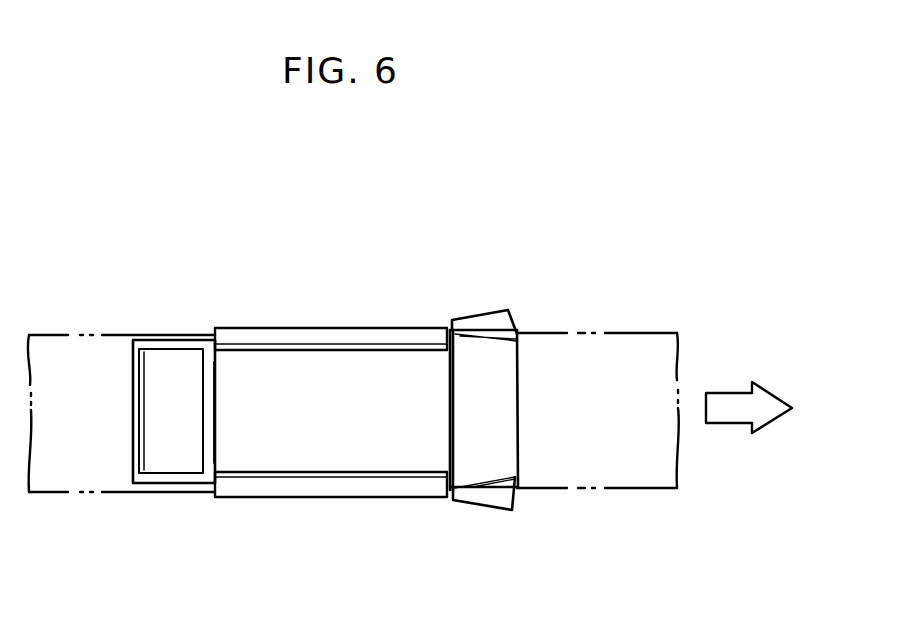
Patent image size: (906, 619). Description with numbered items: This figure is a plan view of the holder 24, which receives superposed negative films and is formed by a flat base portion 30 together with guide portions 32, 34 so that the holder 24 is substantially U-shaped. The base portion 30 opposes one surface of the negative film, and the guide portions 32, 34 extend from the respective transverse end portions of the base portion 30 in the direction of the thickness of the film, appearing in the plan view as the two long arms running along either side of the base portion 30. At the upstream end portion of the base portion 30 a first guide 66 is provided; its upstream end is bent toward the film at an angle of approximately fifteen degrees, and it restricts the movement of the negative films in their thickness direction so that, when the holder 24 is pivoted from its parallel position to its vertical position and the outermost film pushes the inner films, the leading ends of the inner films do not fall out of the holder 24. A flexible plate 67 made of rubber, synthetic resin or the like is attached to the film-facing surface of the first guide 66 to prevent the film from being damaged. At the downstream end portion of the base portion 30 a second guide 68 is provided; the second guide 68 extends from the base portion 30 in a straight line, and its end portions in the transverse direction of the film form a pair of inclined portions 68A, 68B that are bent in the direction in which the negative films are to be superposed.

The holder 24 is at (348, 322).
The base portion 30 is at (290, 375).
The guide portion 32 is at (411, 337).
The guide portion 34 is at (344, 487).
The first guide 66 is at (175, 336).
The flexible plate 67 is at (166, 447).
The second guide 68 is at (498, 378).
The inclined portion 68A is at (495, 327).
The inclined portion 68B is at (490, 497).